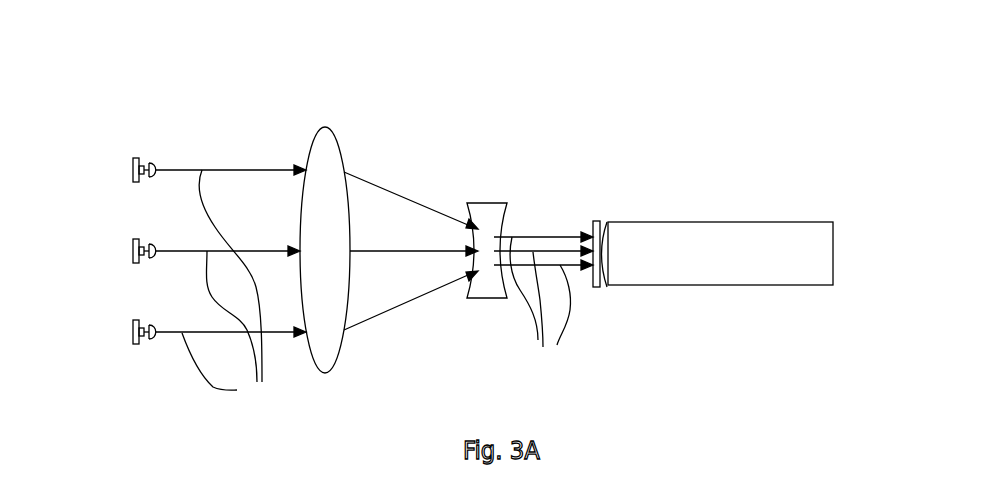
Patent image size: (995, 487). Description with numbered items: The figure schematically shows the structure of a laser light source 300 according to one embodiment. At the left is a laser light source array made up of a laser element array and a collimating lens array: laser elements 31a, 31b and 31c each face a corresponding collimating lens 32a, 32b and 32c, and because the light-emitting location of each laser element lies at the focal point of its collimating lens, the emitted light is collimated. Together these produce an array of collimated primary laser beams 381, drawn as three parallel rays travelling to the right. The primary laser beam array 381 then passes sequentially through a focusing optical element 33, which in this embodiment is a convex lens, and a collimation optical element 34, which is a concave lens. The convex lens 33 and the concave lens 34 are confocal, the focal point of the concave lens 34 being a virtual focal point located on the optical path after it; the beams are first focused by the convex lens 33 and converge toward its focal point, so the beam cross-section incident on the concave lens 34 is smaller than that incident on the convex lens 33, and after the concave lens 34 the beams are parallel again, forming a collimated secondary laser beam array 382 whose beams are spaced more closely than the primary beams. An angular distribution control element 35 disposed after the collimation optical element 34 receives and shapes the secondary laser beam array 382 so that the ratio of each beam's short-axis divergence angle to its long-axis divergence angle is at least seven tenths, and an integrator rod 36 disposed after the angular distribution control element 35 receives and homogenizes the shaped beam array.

The laser light source 300 is at (602, 88).
The laser element 31a is at (132, 168).
The laser element 31b is at (132, 248).
The laser element 31c is at (132, 328).
The collimating lens 32a is at (150, 164).
The collimating lens 32b is at (150, 245).
The collimating lens 32c is at (150, 326).
The focusing optical element 33 is at (316, 141).
The collimation optical element 34 is at (487, 203).
The angular distribution control element 35 is at (607, 222).
The integrator rod 36 is at (717, 221).
The primary laser beam array 381 is at (222, 290).
The secondary laser beam array 382 is at (540, 304).